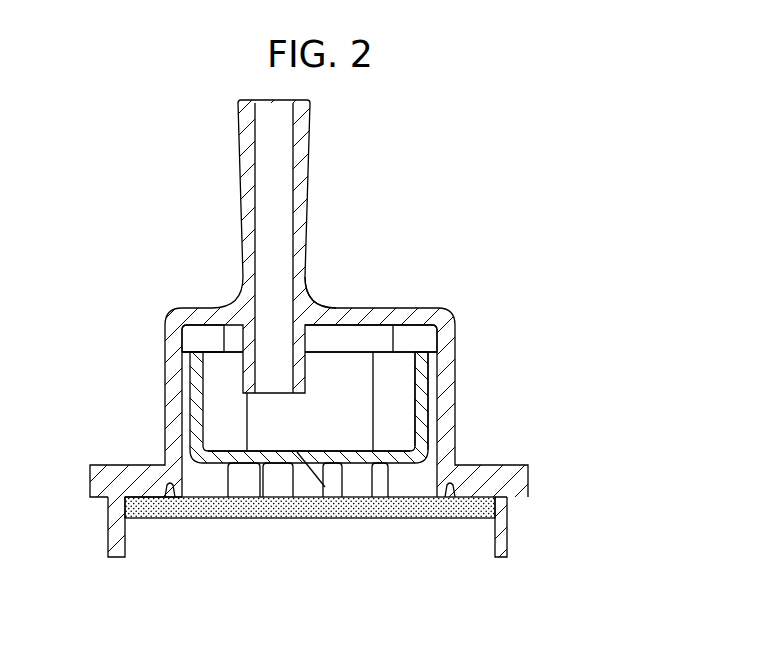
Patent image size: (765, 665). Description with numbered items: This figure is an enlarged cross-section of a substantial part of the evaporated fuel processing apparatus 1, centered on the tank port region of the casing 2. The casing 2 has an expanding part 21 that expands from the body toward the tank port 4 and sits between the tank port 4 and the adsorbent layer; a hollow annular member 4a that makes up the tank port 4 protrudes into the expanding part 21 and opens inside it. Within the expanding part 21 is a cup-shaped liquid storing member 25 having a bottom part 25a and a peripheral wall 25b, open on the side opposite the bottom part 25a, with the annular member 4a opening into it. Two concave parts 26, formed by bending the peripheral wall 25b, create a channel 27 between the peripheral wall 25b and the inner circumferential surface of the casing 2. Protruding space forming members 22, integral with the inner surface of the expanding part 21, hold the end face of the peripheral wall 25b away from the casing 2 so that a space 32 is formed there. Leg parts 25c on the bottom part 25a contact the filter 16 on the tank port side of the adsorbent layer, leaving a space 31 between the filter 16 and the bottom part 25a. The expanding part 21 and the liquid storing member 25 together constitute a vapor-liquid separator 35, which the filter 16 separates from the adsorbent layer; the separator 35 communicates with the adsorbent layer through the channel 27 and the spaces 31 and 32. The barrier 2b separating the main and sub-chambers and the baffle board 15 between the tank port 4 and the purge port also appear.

The evaporated fuel processing apparatus 1 is at (465, 443).
The casing 2 is at (460, 318).
The barrier 2b is at (125, 558).
The tank port 4 is at (300, 148).
The hollow annular member 4a is at (205, 360).
The baffle board 15 is at (506, 545).
The filter 16 is at (224, 518).
The expanding part 21 is at (445, 358).
The space forming members 22 is at (198, 340).
The liquid storing member 25 is at (190, 438).
The bottom part 25a is at (270, 457).
The peripheral wall 25b is at (418, 408).
The leg parts 25c is at (247, 475).
The concave parts 26 is at (235, 385).
The channel 27 is at (398, 425).
The space 31 is at (326, 488).
The space 32 is at (357, 338).
The vapor-liquid separator 35 is at (337, 292).